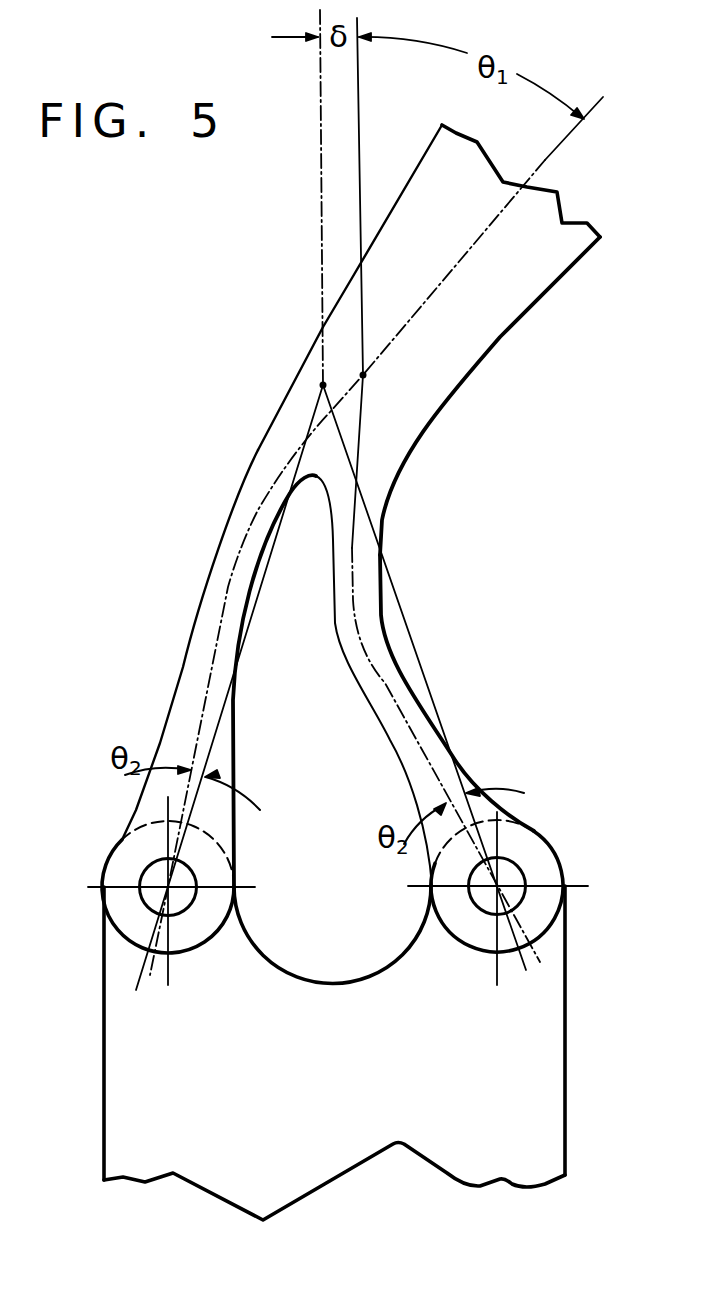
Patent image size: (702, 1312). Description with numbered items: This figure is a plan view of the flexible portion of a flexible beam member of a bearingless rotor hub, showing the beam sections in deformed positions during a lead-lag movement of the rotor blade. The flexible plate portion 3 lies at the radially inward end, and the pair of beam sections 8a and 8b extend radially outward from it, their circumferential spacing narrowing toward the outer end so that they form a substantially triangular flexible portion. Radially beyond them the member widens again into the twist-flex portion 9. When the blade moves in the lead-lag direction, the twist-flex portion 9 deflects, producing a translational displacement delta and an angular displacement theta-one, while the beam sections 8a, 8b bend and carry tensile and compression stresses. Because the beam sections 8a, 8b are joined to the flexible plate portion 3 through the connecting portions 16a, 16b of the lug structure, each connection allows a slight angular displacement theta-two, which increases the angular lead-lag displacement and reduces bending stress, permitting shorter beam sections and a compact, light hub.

The flexible plate portion 3 is at (527, 1102).
The beam section 8a is at (398, 694).
The beam section 8b is at (218, 571).
The twist-flex portion 9 is at (489, 313).
The connecting portion 16a is at (536, 829).
The connecting portion 16b is at (122, 838).